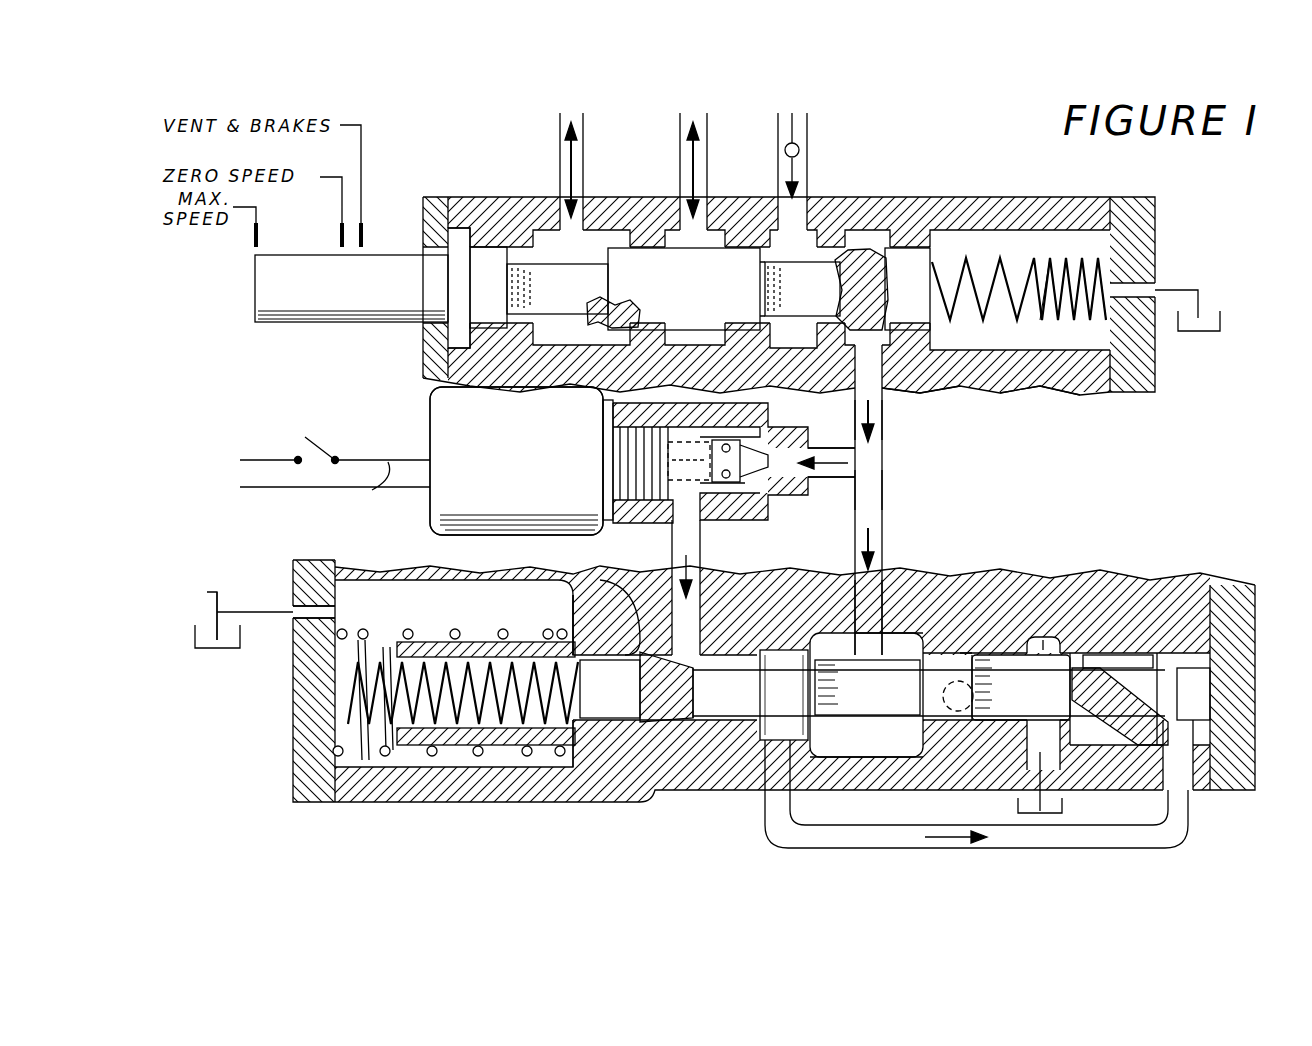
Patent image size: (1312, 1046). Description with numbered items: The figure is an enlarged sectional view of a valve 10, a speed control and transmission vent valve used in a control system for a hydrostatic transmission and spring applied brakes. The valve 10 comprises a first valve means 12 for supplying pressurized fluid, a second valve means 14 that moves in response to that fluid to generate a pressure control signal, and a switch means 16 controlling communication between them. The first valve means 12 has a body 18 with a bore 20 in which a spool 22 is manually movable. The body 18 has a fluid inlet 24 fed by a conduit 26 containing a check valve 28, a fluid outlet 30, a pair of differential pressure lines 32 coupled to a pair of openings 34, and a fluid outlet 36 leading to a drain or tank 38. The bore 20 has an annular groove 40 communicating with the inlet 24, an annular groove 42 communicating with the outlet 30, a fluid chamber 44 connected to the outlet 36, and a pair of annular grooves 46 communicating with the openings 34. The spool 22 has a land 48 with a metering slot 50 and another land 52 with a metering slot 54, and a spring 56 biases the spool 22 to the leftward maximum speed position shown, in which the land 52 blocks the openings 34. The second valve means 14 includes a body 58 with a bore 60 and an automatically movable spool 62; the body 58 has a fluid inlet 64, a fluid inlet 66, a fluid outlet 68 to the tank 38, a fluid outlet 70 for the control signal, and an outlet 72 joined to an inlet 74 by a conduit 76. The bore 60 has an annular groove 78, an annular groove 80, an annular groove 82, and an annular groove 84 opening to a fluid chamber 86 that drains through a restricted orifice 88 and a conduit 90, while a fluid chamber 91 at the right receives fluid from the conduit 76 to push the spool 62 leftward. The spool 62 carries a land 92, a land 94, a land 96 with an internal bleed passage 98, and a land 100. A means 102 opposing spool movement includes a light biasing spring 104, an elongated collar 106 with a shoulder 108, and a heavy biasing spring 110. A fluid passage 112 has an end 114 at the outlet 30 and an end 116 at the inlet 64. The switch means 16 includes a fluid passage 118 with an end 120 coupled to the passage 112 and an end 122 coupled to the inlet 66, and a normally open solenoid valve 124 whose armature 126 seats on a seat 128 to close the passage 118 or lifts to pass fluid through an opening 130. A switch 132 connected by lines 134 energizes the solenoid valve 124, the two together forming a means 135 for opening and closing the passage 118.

The valve 10 is at (1205, 443).
The first valve means 12 is at (1230, 226).
The second valve means 14 is at (1228, 554).
The switch means 16 is at (378, 391).
The body 18 is at (1035, 400).
The bore 20 is at (925, 350).
The spool 22 is at (343, 316).
The fluid inlet 24 is at (776, 232).
The conduit 26 is at (808, 180).
The check valve 28 is at (800, 148).
The fluid outlet 30 is at (880, 365).
The differential pressure lines 32 is at (680, 137).
The openings or ports 34 is at (674, 205).
The fluid outlet 36 is at (1150, 292).
The drain or tank 38 is at (1018, 812).
The annular groove 40 is at (869, 236).
The annular groove 42 is at (908, 258).
The fluid chamber 44 is at (1003, 245).
The annular grooves 46 is at (690, 243).
The land 48 is at (900, 265).
The metering slot 50 is at (802, 289).
The land 52 is at (708, 306).
The metering slot 54 is at (607, 320).
The spring 56 is at (1045, 258).
The body 58 is at (1078, 623).
The bore 60 is at (862, 645).
The spool 62 is at (737, 698).
The fluid inlet 64 is at (900, 650).
The fluid inlet 66 is at (668, 622).
The fluid outlet 68 is at (1043, 770).
The fluid outlet 70 is at (996, 632).
The outlet 72 is at (790, 760).
The inlet 74 is at (1192, 775).
The conduit 76 is at (1183, 843).
The annular groove 78 is at (941, 622).
The annular groove 80 is at (774, 648).
The annular groove 82 is at (1043, 647).
The annular groove 84 is at (620, 752).
The fluid chamber 86 is at (457, 765).
The restricted orifice 88 is at (297, 590).
The conduit 90 is at (194, 608).
The fluid chamber 91 is at (1195, 727).
The land 92 is at (833, 715).
The land 94 is at (943, 725).
The land 96 is at (1113, 662).
The internal bleed passage 98 is at (1160, 703).
The land 100 is at (662, 735).
The means for controlling or opposing movement 102 is at (322, 696).
The light biasing spring 104 is at (362, 800).
The elongated collar 106 is at (462, 637).
The shoulder 108 is at (543, 632).
The heavy biasing spring 110 is at (408, 628).
The fluid passage 112 is at (884, 488).
The end 114 is at (884, 425).
The end 116 is at (893, 600).
The fluid passage 118 is at (836, 478).
The end 120 is at (838, 445).
The end 122 is at (665, 578).
The solenoid valve 124 is at (420, 529).
The armature 126 is at (688, 410).
The seat 128 is at (735, 430).
The opening 130 is at (714, 503).
The switch 132 is at (318, 436).
The lines 134 is at (387, 492).
The means for opening and closing the passage 135 is at (322, 535).